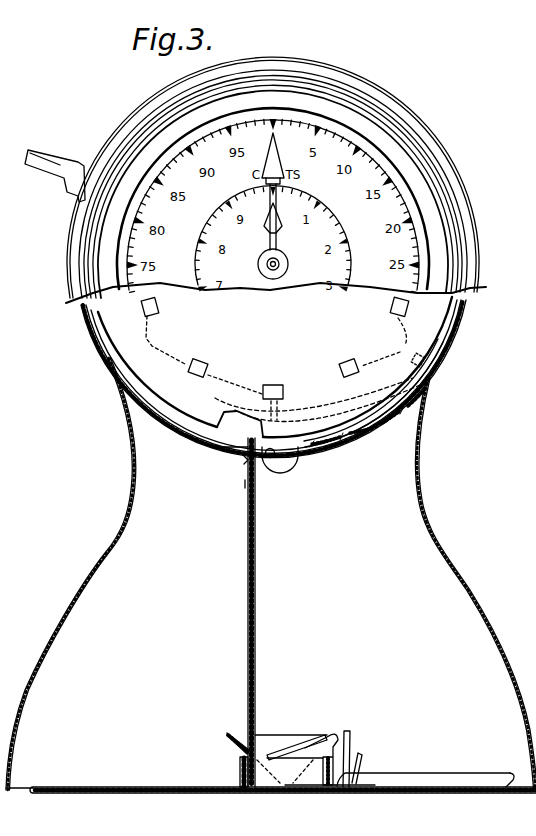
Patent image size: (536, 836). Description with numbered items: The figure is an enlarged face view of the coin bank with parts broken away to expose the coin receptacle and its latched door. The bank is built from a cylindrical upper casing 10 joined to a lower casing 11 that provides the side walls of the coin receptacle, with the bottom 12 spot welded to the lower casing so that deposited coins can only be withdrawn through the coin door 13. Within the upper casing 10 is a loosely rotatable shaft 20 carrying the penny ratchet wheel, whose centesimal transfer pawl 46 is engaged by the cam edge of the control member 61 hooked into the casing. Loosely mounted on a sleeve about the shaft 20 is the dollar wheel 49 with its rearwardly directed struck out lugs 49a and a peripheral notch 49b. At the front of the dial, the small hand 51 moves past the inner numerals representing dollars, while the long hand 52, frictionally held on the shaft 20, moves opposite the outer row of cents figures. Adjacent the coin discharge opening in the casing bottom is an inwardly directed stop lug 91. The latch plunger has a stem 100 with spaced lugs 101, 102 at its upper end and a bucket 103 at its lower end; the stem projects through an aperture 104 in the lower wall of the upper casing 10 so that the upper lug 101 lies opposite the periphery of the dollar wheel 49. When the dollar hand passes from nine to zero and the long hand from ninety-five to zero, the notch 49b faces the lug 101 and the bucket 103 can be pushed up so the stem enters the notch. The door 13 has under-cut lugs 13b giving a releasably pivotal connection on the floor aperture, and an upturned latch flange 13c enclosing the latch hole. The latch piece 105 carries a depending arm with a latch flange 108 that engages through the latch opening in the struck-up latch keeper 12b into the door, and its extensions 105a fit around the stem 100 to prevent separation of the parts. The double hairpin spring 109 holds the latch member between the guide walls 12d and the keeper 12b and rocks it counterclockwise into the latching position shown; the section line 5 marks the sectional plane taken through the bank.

The section line 5 is at (252, 45).
The upper casing 10 is at (468, 310).
The lower casing 11 is at (433, 526).
The bottom 12 is at (68, 783).
The latch keeper 12b is at (348, 732).
The guide walls 12d is at (238, 770).
The coin door 13 is at (418, 775).
The under-cut lugs 13b is at (507, 773).
The upturned latch flange 13c is at (361, 757).
The shaft 20 is at (268, 268).
The centesimal transfer pawl 46 is at (301, 398).
The dollar wheel 49 is at (430, 330).
The struck out lugs 49a is at (279, 358).
The notch 49b is at (233, 412).
The small hand 51 is at (283, 226).
The long hand 52 is at (285, 192).
The control member 61 is at (352, 427).
The stop lug 91 is at (266, 462).
The stem 100 is at (256, 648).
The upper lug 101 is at (213, 447).
The lug 102 is at (245, 483).
The bucket 103 is at (297, 788).
The aperture 104 is at (244, 460).
The latch piece 105 is at (268, 755).
The extensions 105a is at (235, 735).
The latch flange 108 is at (367, 793).
The double hairpin spring 109 is at (308, 750).